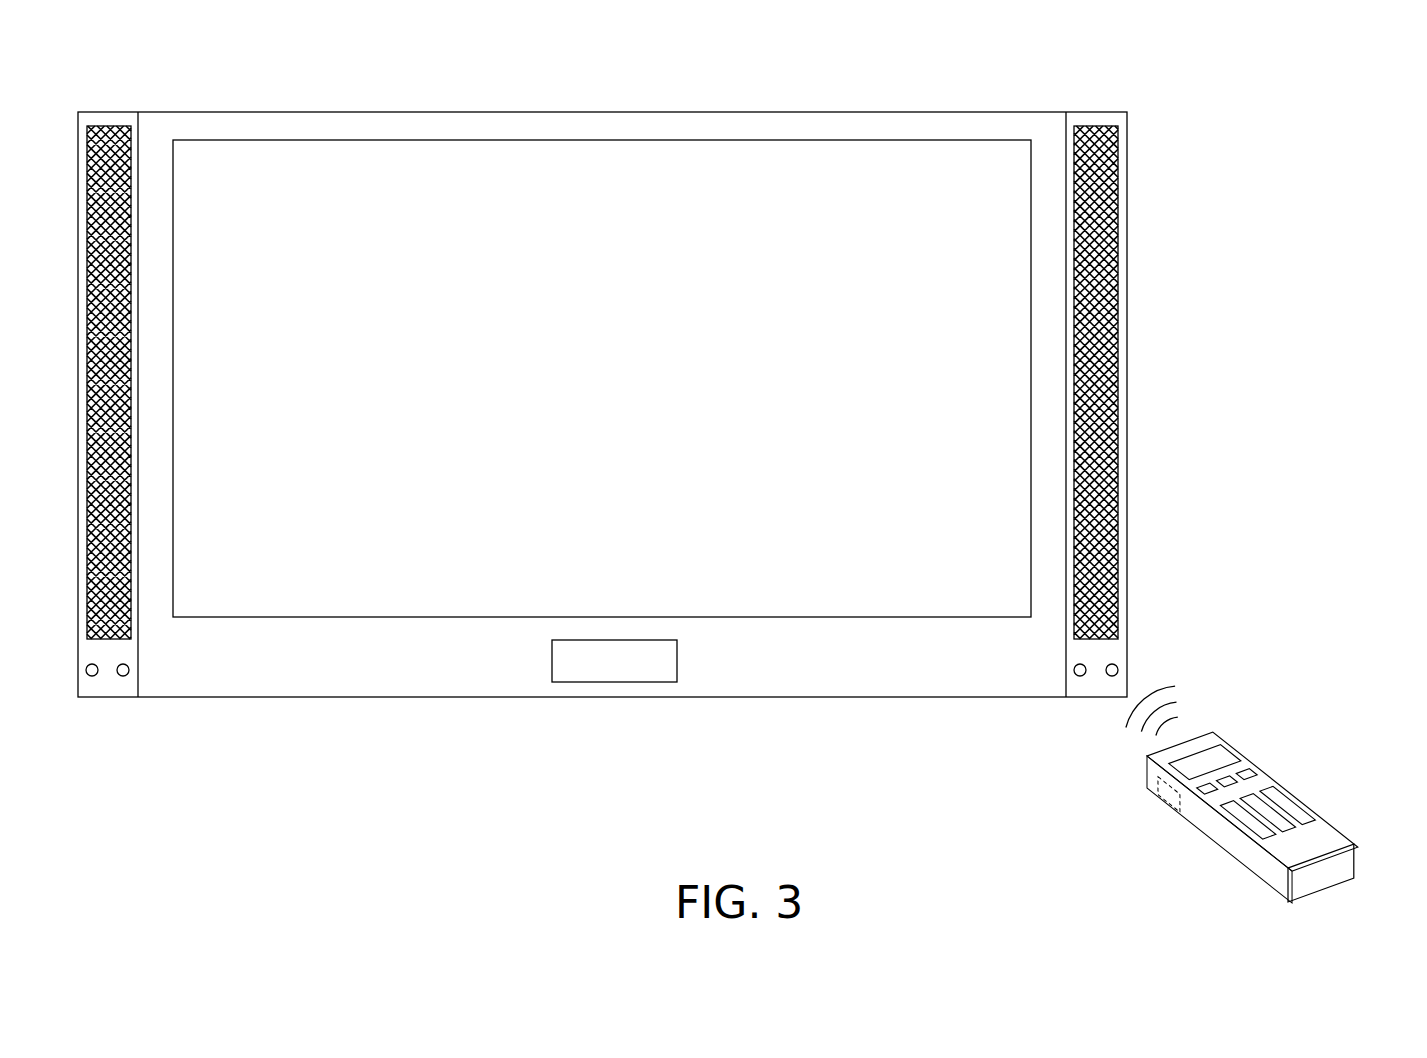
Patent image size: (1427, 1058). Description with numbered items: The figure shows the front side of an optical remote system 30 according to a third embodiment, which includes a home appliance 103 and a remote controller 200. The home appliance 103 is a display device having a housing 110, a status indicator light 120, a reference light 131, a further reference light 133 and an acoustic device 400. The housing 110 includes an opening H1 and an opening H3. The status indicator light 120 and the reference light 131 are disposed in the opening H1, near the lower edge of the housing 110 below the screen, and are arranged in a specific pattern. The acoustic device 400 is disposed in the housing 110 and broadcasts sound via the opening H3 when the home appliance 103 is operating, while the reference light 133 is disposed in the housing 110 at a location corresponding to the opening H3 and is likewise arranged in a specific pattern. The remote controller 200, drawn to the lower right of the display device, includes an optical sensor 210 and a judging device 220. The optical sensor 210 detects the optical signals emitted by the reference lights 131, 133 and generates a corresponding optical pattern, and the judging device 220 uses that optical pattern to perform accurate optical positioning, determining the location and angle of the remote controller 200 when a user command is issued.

The optical remote system 30 is at (1266, 176).
The housing 110 is at (289, 112).
The acoustic device 400 is at (111, 112).
The opening H1 is at (672, 667).
The status indicator light 120 is at (728, 661).
The reference light 131 is at (728, 661).
The opening H3 is at (108, 640).
The reference light 133 is at (140, 698).
The home appliance 103 is at (1041, 686).
The remote controller 200 is at (1327, 820).
The optical sensor 210 is at (1227, 757).
The judging device 220 is at (1168, 805).